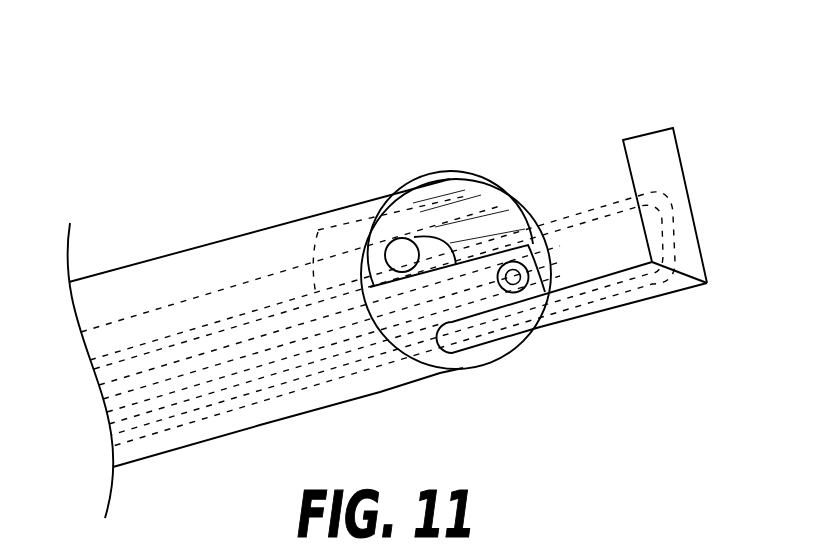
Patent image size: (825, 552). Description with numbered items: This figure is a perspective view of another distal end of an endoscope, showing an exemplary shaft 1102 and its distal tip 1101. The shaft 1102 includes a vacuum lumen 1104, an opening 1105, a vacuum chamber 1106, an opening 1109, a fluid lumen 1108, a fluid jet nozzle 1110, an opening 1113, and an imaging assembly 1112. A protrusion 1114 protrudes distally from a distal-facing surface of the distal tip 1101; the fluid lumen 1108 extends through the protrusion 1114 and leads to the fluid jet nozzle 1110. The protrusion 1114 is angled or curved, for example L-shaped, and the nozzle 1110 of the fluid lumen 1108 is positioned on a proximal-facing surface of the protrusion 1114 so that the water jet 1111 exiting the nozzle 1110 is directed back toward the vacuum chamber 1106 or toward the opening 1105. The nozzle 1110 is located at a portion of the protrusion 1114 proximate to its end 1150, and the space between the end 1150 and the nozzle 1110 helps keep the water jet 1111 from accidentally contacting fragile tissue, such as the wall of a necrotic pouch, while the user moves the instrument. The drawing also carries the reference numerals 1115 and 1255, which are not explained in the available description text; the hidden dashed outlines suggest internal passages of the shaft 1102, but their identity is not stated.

The distal tip 1101 is at (438, 75).
The shaft 1102 is at (184, 231).
The vacuum lumen 1104 is at (260, 278).
The opening 1105 is at (422, 242).
The vacuum chamber 1106 is at (412, 216).
The fluid lumen 1108 is at (673, 282).
The opening 1109 is at (483, 196).
The fluid jet nozzle 1110 is at (633, 192).
The water jet 1111 is at (573, 207).
The imaging assembly 1112 is at (530, 268).
The opening 1113 is at (532, 279).
The protrusion 1114 is at (605, 310).
The hidden guide rods 1115 is at (338, 342).
The end of protrusion 1150 is at (663, 130).
The reference element 1255 is at (613, 540).